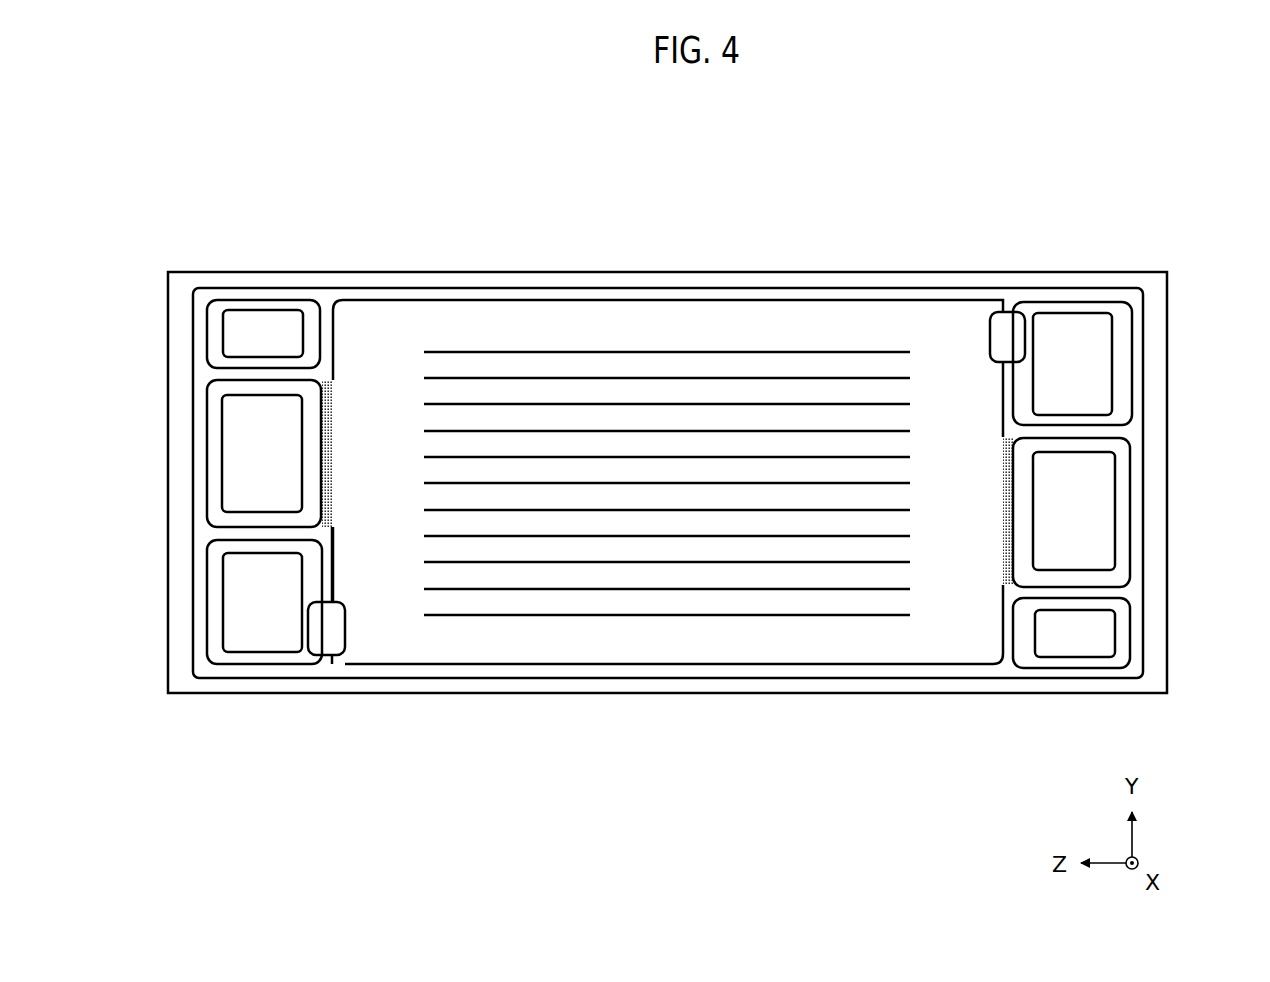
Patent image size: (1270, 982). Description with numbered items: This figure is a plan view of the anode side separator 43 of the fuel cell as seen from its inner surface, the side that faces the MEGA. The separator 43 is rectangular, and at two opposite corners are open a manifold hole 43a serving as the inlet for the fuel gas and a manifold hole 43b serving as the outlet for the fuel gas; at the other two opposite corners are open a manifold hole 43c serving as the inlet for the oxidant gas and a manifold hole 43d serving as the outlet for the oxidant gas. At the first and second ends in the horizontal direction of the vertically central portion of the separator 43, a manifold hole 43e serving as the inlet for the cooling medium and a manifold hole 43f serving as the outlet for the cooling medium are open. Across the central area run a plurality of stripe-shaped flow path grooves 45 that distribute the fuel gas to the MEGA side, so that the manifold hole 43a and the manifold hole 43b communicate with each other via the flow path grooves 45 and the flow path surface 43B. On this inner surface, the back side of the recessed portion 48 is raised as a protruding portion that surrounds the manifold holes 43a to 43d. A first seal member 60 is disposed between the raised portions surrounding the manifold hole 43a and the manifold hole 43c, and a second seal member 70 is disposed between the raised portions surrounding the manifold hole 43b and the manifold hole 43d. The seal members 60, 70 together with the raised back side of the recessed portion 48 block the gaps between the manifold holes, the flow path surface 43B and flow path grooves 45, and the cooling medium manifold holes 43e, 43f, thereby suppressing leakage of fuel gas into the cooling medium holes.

The anode side separator 43 is at (1092, 183).
The manifold hole 43a is at (257, 312).
The manifold hole 43b is at (1110, 643).
The manifold hole 43c is at (223, 621).
The manifold hole 43d is at (1061, 318).
The manifold hole 43e is at (1110, 522).
The manifold hole 43f is at (223, 458).
The flow path surface 43B is at (683, 332).
The flow path grooves 45 is at (565, 450).
The recessed portion 48 is at (945, 290).
The first seal member 60 is at (331, 464).
The second seal member 70 is at (1005, 462).